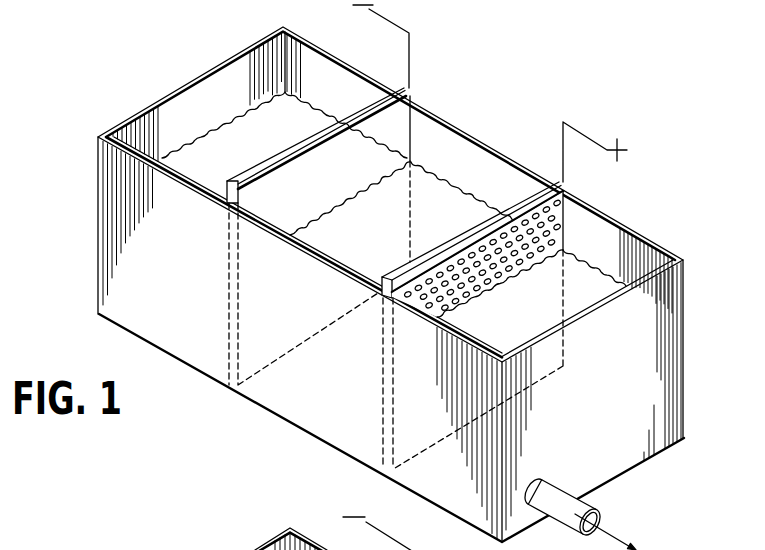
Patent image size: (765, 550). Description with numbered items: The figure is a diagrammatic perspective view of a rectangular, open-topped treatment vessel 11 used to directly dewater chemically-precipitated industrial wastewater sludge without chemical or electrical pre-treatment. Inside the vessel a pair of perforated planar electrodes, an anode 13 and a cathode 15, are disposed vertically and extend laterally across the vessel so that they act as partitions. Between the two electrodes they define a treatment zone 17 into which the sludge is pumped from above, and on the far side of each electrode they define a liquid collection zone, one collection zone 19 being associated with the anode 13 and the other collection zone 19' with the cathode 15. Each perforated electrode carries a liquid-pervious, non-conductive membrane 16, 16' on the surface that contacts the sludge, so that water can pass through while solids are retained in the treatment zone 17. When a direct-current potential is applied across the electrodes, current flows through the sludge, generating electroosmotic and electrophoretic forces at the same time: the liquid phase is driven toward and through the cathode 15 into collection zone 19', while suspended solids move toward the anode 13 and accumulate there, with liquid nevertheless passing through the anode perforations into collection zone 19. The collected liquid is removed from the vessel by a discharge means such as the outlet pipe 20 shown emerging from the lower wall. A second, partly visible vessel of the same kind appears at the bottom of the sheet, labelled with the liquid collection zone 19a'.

The treatment vessel 11 is at (684, 283).
The anode 13 is at (567, 200).
The cathode 15 is at (412, 94).
The membrane 16 is at (459, 240).
The membrane 16' is at (316, 177).
The treatment zone 17 is at (466, 191).
The liquid collection zone 19 is at (555, 260).
The liquid collection zone 19' is at (284, 93).
The liquid level of second cell 19a' is at (272, 533).
The outlet pipe 20 is at (597, 511).